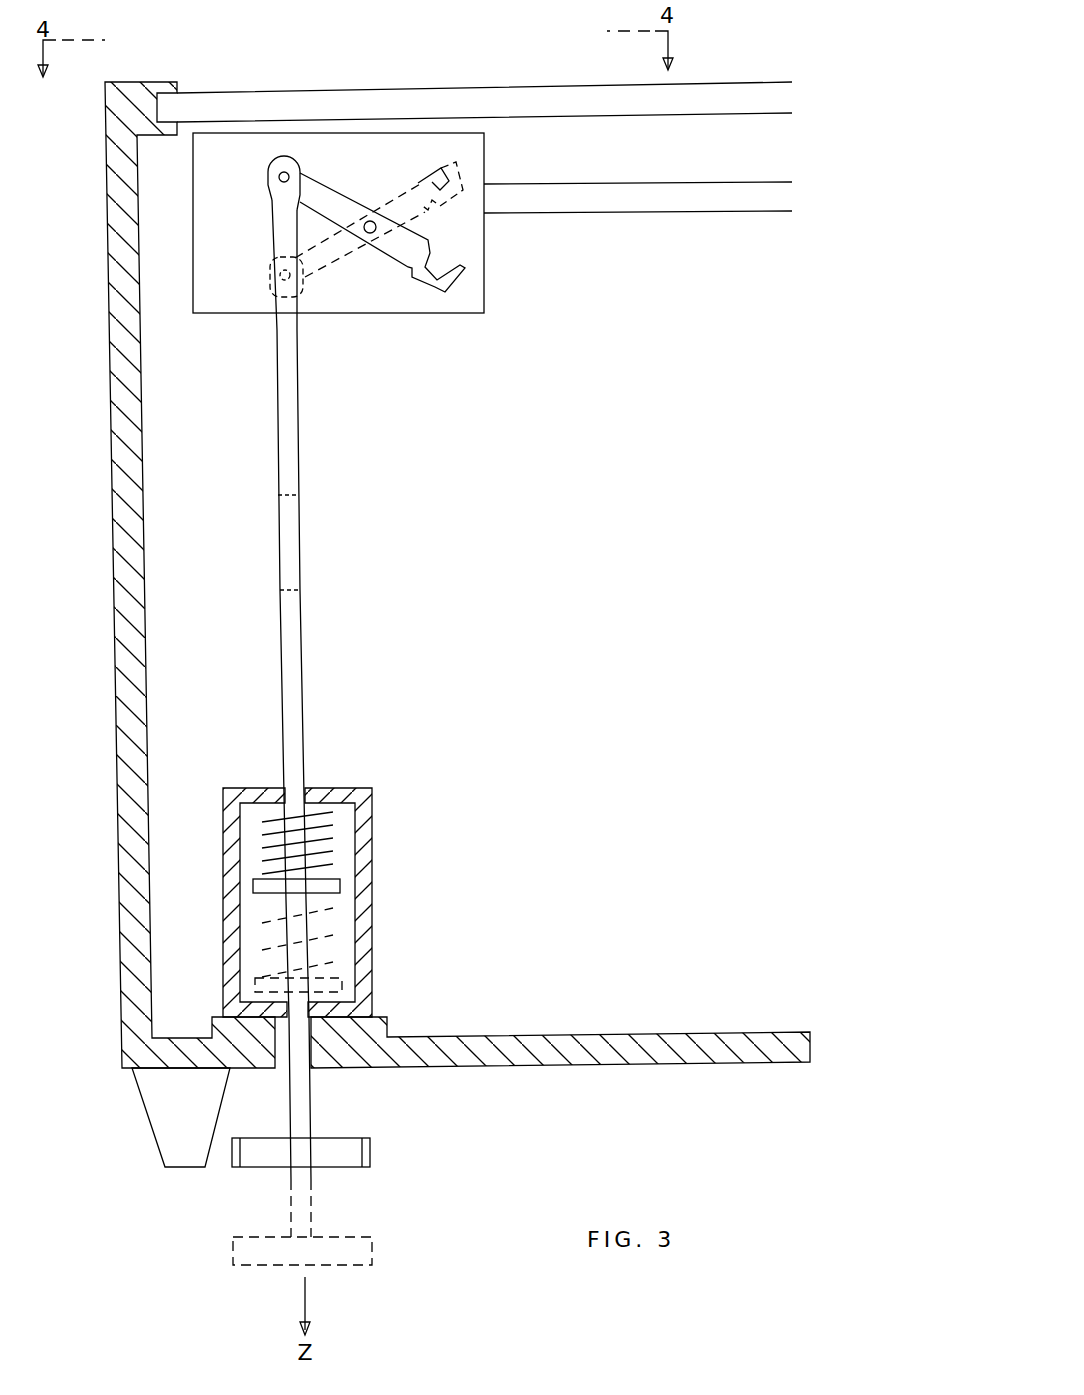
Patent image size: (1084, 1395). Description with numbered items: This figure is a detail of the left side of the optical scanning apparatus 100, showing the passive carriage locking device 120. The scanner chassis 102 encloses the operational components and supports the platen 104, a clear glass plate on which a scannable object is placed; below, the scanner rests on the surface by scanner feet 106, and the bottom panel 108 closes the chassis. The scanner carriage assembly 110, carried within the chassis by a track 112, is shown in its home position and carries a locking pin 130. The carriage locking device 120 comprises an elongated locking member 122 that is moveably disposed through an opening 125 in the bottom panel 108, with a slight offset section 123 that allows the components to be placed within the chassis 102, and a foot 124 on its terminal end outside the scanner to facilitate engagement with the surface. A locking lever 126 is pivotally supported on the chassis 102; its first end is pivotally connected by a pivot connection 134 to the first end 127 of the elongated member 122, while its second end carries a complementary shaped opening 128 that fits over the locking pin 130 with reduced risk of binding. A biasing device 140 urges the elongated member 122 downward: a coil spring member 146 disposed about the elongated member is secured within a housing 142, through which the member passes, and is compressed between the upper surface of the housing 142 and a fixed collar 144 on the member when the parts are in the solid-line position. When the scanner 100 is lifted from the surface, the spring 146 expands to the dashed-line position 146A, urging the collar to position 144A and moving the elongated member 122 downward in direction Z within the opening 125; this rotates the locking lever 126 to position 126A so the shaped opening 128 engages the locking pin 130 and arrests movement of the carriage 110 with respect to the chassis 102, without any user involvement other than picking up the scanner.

The optical scanning apparatus 100 is at (753, 45).
The chassis 102 is at (117, 328).
The platen 104 is at (513, 96).
The scanner feet 106 is at (160, 1125).
The bottom panel 108 is at (558, 1035).
The scanner carriage assembly 110 is at (478, 148).
The track 112 is at (703, 196).
The carriage locking device 120 is at (532, 522).
The elongated locking member 122 is at (300, 658).
The offset section 123 is at (298, 543).
The foot 124 is at (368, 1152).
The opening 125 is at (315, 1062).
The locking lever 126 is at (345, 203).
The locking lever rotated position 126A is at (337, 247).
The first end of the elongated member 127 is at (252, 173).
The complementary shaped opening 128 is at (440, 265).
The locking pin 130 is at (430, 178).
The pivot connection 134 is at (279, 178).
The biasing device 140 is at (372, 800).
The housing 142 is at (230, 868).
The fixed collar 144 is at (338, 884).
The collar displaced position 144A is at (342, 980).
The spring member 146 is at (325, 838).
The spring expanded position 146A is at (335, 922).